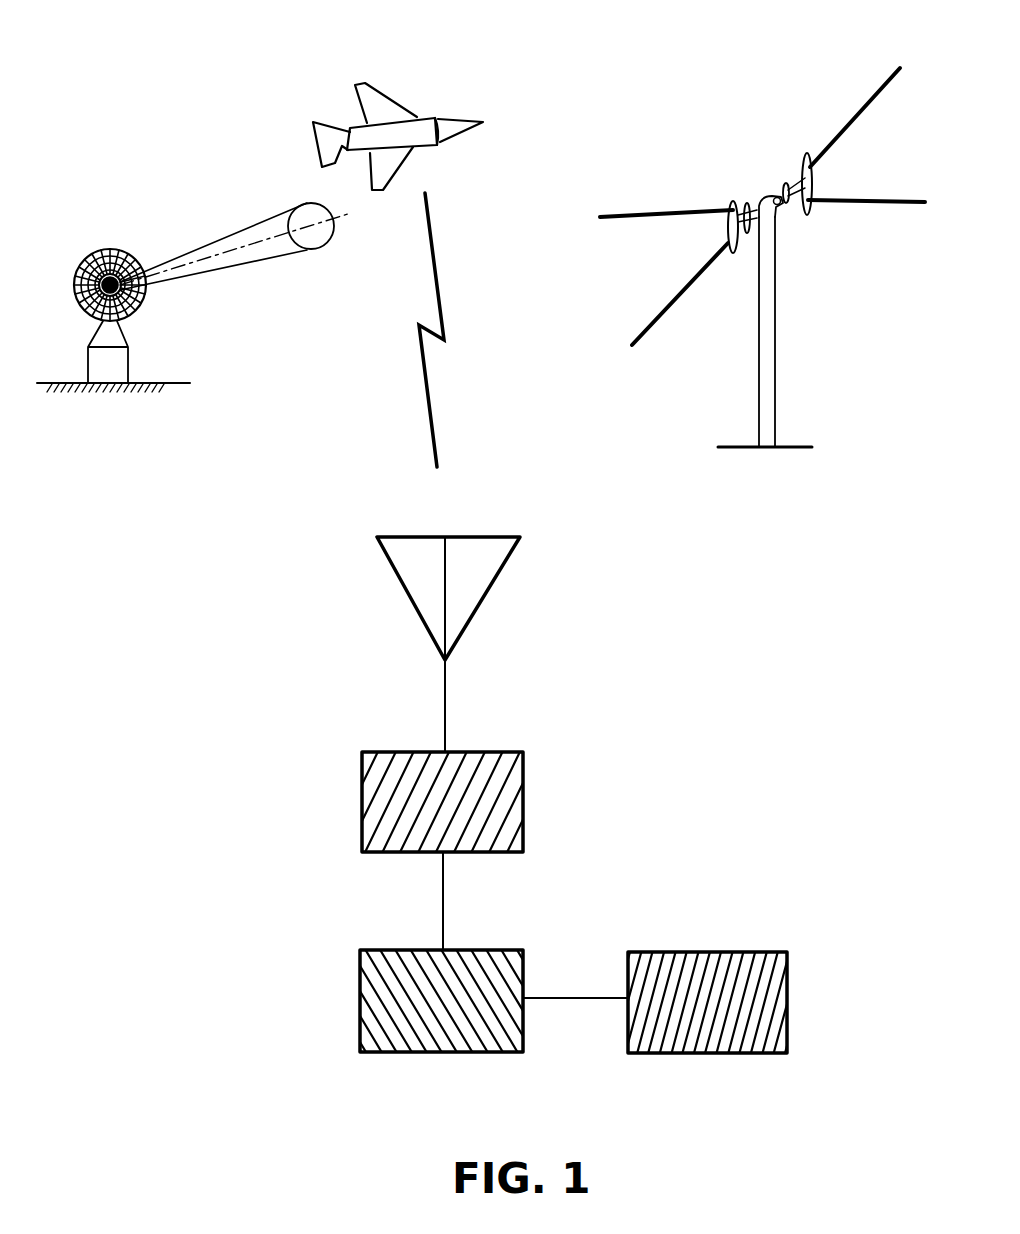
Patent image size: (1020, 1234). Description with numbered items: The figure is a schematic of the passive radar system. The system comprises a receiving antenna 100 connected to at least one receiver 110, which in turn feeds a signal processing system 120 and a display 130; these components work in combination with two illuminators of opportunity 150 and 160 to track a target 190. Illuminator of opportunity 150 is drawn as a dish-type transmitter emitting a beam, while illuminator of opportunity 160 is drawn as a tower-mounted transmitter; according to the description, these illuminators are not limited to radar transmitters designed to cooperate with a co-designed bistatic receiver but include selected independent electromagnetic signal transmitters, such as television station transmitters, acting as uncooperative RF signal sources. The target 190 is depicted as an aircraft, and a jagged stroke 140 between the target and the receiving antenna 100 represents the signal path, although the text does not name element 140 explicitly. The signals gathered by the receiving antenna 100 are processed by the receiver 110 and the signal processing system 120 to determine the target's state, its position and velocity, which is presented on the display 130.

The receiving antenna 100 is at (400, 585).
The receiver 110 is at (523, 784).
The signal processing system 120 is at (360, 978).
The display 130 is at (710, 952).
The radio frequency signal 140 is at (425, 383).
The illuminator of opportunity 150 is at (107, 218).
The illuminator of opportunity 160 is at (731, 165).
The target 190 is at (455, 100).